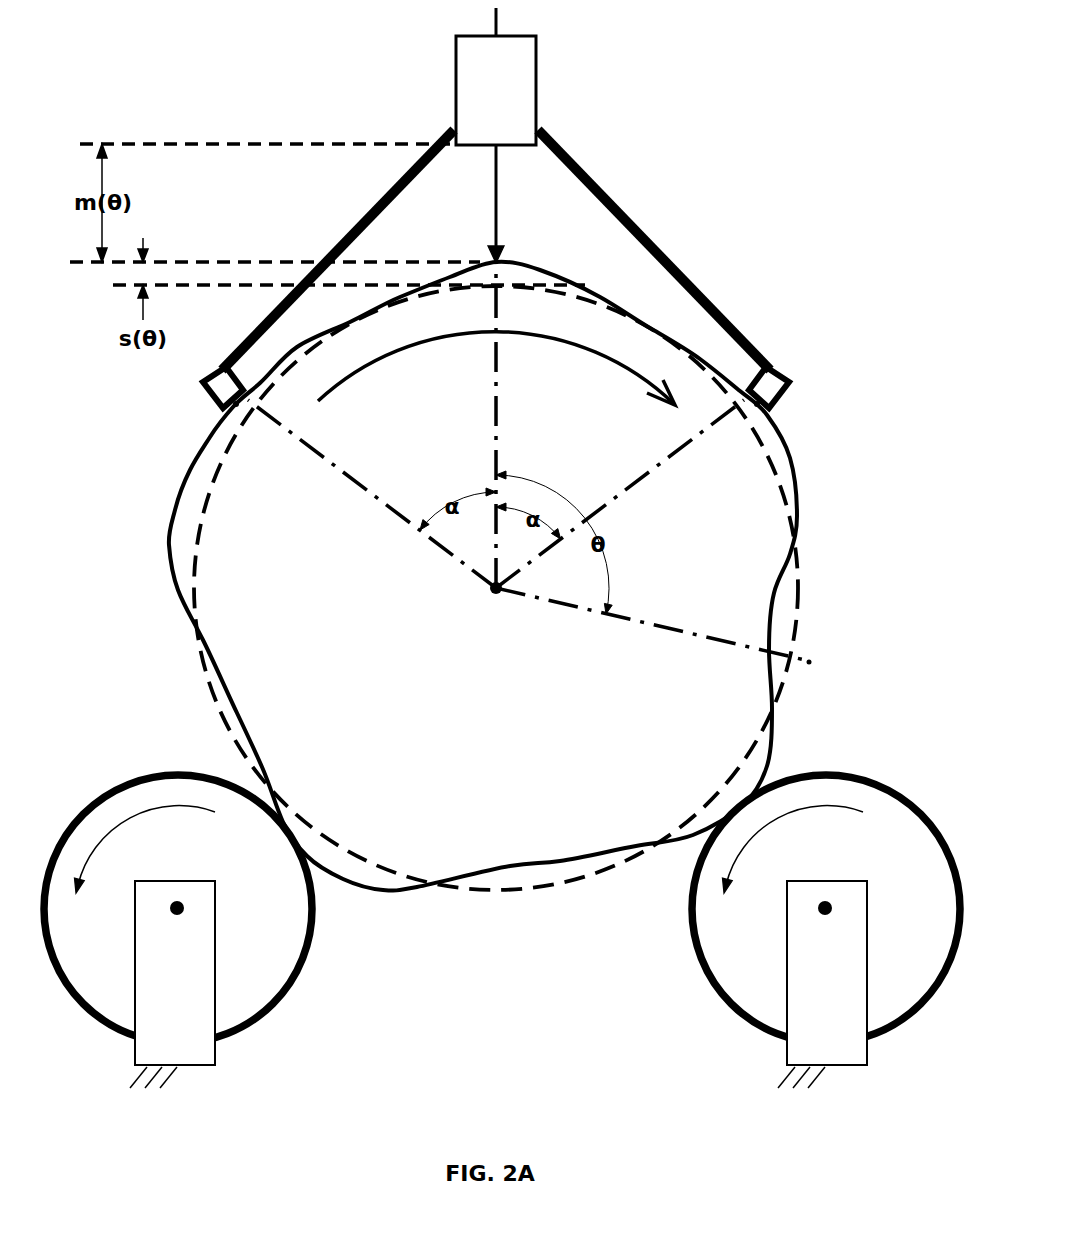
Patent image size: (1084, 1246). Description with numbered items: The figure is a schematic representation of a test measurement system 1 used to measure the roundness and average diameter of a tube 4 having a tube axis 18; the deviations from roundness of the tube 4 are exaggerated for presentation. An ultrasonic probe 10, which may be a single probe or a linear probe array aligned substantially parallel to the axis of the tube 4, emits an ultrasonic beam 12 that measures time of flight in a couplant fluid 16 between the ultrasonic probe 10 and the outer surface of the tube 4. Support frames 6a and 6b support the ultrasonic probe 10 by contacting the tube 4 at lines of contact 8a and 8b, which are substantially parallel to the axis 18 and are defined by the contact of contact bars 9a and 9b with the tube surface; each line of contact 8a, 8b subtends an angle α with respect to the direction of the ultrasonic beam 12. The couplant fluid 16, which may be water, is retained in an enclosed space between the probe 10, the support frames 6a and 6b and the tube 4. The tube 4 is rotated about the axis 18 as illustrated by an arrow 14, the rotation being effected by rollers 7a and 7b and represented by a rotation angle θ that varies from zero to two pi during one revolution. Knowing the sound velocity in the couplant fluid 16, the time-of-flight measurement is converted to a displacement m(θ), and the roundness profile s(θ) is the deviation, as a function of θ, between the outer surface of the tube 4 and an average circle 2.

The test measurement system 1 is at (775, 105).
The average circle 2 is at (216, 700).
The tube 4 is at (168, 538).
The support frame 6a is at (392, 186).
The support frame 6b is at (654, 250).
The roller 7a is at (275, 960).
The roller 7b is at (720, 946).
The line of contact 8a is at (234, 410).
The line of contact 8b is at (770, 410).
The contact bar 9a is at (207, 392).
The contact bar 9b is at (790, 390).
The ultrasonic probe 10 is at (462, 66).
The ultrasonic beam 12 is at (492, 210).
The arrow 14 is at (455, 333).
The couplant fluid 16 is at (583, 228).
The tube axis 18 is at (492, 598).